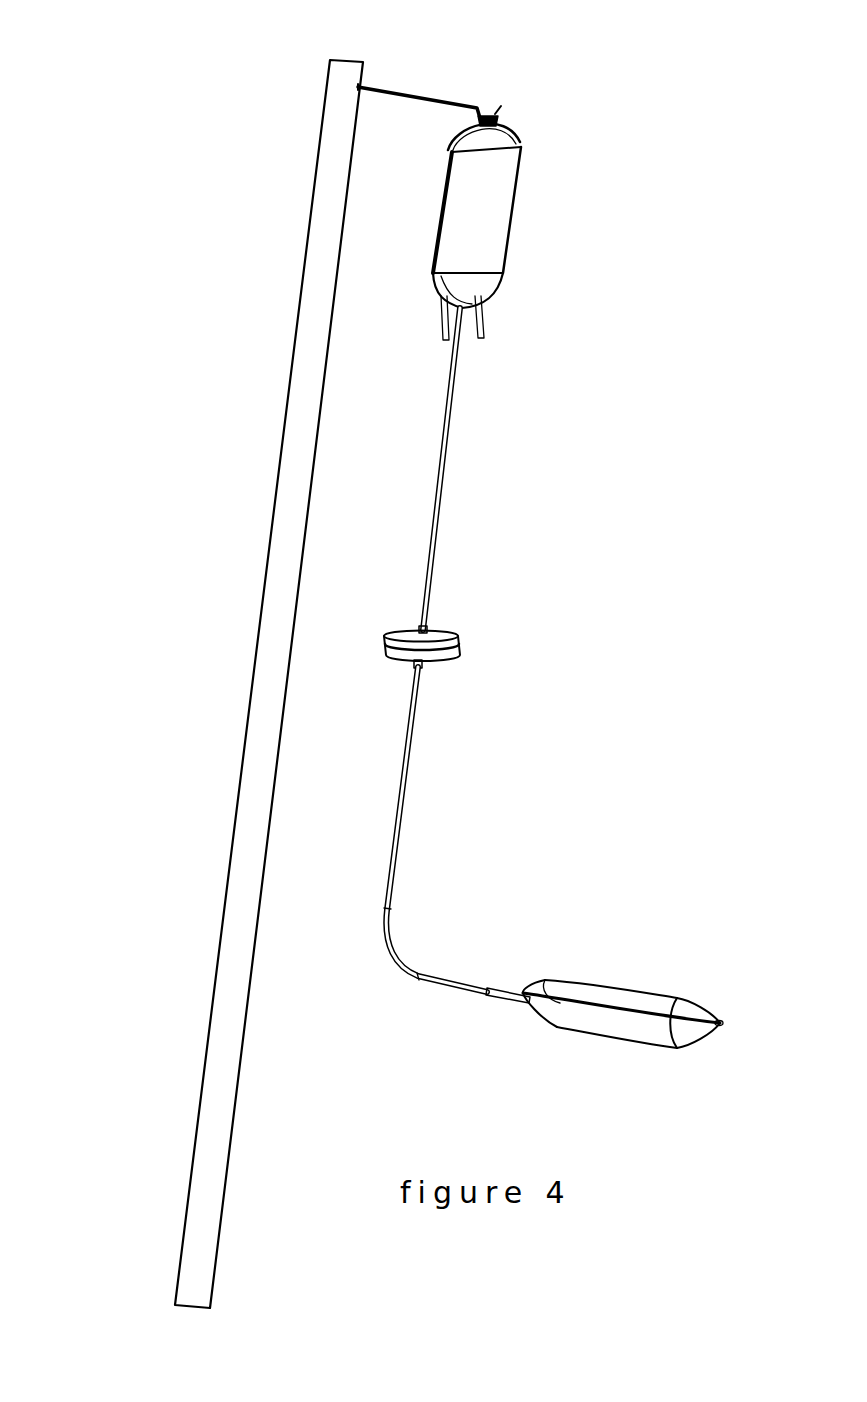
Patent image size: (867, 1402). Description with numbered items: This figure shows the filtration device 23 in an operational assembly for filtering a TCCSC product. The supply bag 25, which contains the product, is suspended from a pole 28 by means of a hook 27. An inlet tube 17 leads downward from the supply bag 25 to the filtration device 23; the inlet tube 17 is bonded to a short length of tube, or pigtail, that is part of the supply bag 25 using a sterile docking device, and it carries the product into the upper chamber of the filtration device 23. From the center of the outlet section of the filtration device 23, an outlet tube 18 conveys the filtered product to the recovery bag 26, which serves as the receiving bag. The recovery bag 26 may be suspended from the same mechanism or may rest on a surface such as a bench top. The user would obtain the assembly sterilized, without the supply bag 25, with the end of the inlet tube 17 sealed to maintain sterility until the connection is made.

The inlet tube 17 is at (452, 433).
The outlet tube 18 is at (405, 796).
The filtration device 23 is at (460, 640).
The supply bag 25 is at (494, 213).
The recovery bag 26 is at (640, 988).
The hook 27 is at (437, 97).
The pole 28 is at (310, 360).